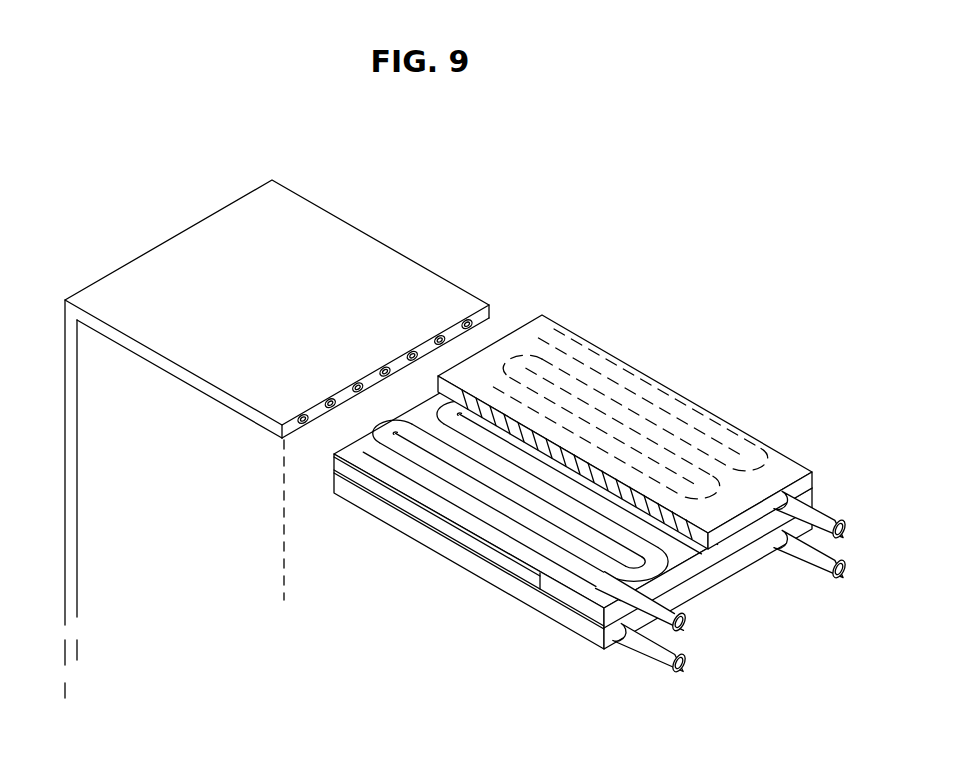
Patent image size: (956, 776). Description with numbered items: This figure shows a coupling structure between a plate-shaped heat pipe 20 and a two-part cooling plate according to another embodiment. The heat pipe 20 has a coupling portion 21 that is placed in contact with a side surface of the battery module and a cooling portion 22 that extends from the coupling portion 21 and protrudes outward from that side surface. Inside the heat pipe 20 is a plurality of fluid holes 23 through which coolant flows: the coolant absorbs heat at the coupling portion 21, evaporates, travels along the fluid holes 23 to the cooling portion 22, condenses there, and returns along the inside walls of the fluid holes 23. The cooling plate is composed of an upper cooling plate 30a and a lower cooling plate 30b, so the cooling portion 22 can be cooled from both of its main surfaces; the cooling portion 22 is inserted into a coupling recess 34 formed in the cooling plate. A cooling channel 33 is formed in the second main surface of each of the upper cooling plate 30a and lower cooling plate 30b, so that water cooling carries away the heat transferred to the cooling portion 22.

The heat pipe 20 is at (252, 406).
The coupling portion 21 is at (88, 462).
The cooling portion 22 is at (290, 206).
The fluid holes 23 is at (310, 430).
The upper cooling plate 30a is at (712, 396).
The lower cooling plate 30b is at (573, 522).
The cooling channel 33 is at (660, 412).
The coupling recess 34 is at (450, 532).